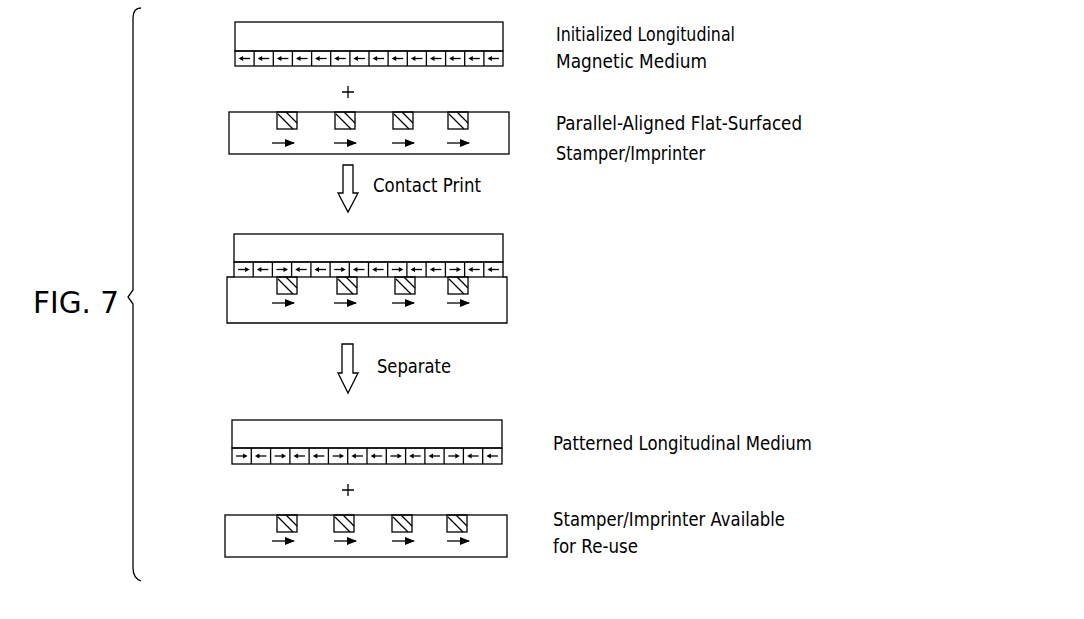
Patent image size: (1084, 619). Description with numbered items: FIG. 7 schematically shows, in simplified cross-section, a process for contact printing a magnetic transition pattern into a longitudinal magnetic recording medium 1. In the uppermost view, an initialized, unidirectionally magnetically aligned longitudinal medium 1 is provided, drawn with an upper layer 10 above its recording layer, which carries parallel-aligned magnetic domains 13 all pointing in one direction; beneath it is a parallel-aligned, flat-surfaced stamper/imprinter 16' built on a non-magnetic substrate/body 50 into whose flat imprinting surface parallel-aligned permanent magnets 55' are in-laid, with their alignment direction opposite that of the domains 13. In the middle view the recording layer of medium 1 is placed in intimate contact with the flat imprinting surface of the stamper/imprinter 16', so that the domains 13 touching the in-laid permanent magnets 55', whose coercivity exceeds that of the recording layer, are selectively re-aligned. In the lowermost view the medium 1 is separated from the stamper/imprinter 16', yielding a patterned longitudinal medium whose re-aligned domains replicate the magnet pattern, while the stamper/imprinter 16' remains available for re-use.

The longitudinal magnetic recording medium 1 is at (359, 243).
The substrate of magnetic medium 10 is at (381, 47).
The parallel-aligned magnetic domains 13 is at (480, 71).
The parallel-aligned flat-surfaced stamper/imprinter 16' is at (327, 319).
The non-magnetic substrate/body 50 is at (387, 151).
The in-laid permanent magnets 55' is at (434, 105).